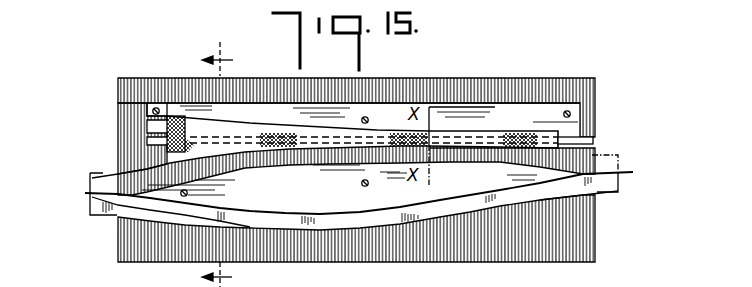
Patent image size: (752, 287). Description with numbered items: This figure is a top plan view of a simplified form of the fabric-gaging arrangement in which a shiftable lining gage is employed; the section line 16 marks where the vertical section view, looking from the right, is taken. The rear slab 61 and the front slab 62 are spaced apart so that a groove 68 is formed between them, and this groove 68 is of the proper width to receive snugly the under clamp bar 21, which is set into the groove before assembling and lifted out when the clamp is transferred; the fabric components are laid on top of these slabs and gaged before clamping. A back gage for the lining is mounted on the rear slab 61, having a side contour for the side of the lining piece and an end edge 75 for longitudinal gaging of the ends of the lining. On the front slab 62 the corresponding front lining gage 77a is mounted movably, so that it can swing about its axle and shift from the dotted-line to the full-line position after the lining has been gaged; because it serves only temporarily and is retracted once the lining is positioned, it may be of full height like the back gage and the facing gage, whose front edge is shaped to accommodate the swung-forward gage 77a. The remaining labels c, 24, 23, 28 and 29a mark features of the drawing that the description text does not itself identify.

The section line 16— 16 is at (201, 164).
The upper plate edge c is at (217, 128).
The upper plate 24 is at (376, 129).
The inner plate 23 is at (494, 104).
The rear slab 61 is at (563, 87).
The front slab 62 is at (568, 253).
The under clamp bar 21 is at (593, 141).
The end edge 75 is at (170, 124).
The groove 68 is at (170, 138).
The front lining gage 77a is at (107, 176).
The rod 28 is at (80, 196).
The chamber 29a is at (339, 182).